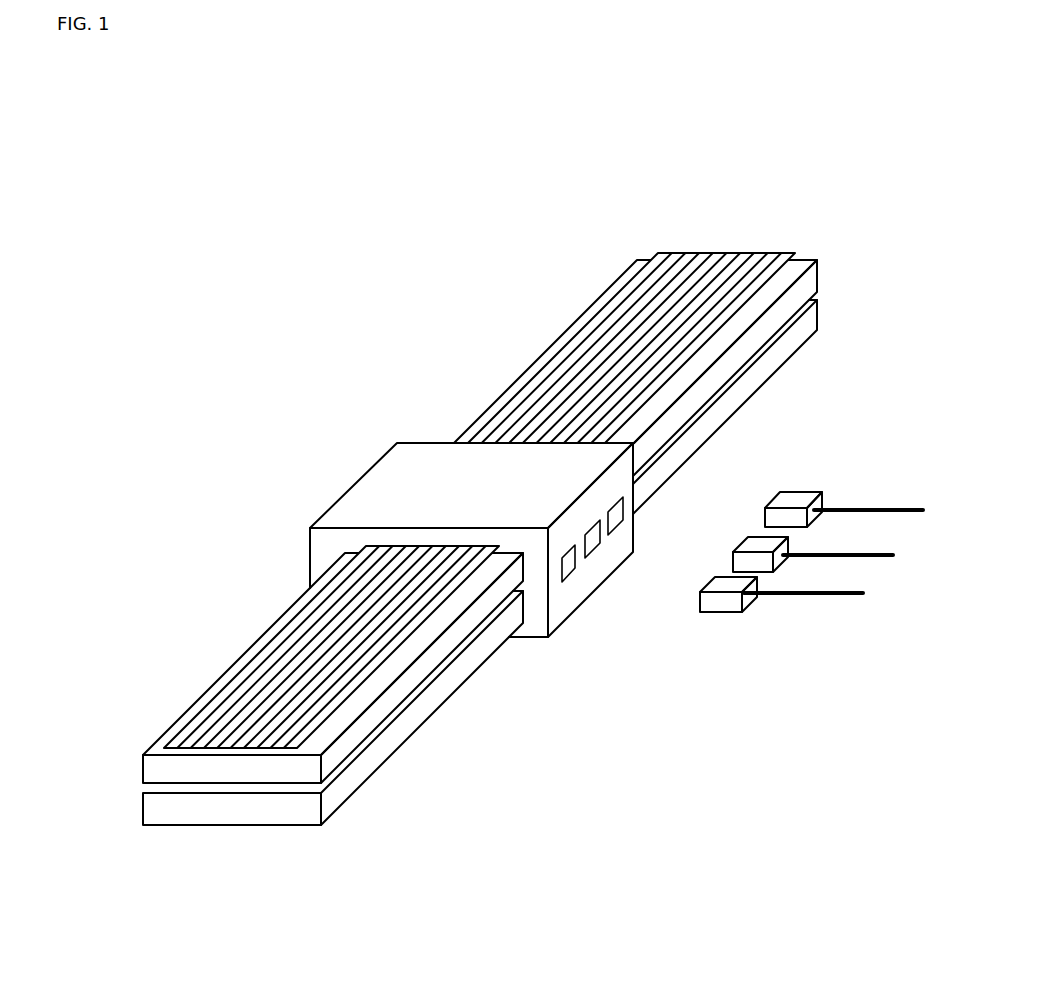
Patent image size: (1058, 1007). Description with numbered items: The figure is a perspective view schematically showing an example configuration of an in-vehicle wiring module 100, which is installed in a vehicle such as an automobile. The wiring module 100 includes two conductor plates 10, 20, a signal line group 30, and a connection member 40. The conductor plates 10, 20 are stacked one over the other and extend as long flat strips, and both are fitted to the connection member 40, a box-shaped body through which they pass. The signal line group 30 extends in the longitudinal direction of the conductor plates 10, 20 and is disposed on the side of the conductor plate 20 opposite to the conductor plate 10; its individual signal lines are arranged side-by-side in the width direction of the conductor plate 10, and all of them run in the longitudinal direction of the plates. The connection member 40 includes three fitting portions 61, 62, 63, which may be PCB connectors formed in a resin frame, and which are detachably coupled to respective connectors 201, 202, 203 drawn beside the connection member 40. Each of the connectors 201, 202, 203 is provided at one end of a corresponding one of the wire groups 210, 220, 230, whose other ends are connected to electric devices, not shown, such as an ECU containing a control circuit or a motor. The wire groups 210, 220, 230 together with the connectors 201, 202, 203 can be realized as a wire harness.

The wiring module 100 is at (688, 150).
The conductor plate 10 is at (747, 390).
The conductor plate 20 is at (745, 348).
The signal line group 30 is at (698, 278).
The connection member 40 is at (418, 460).
The fitting portion 61 is at (573, 562).
The fitting portion 62 is at (602, 542).
The fitting portion 63 is at (625, 515).
The connector 201 is at (725, 585).
The connector 202 is at (758, 540).
The connector 203 is at (790, 497).
The wire group 210 is at (813, 597).
The wire group 220 is at (860, 553).
The wire group 230 is at (877, 507).